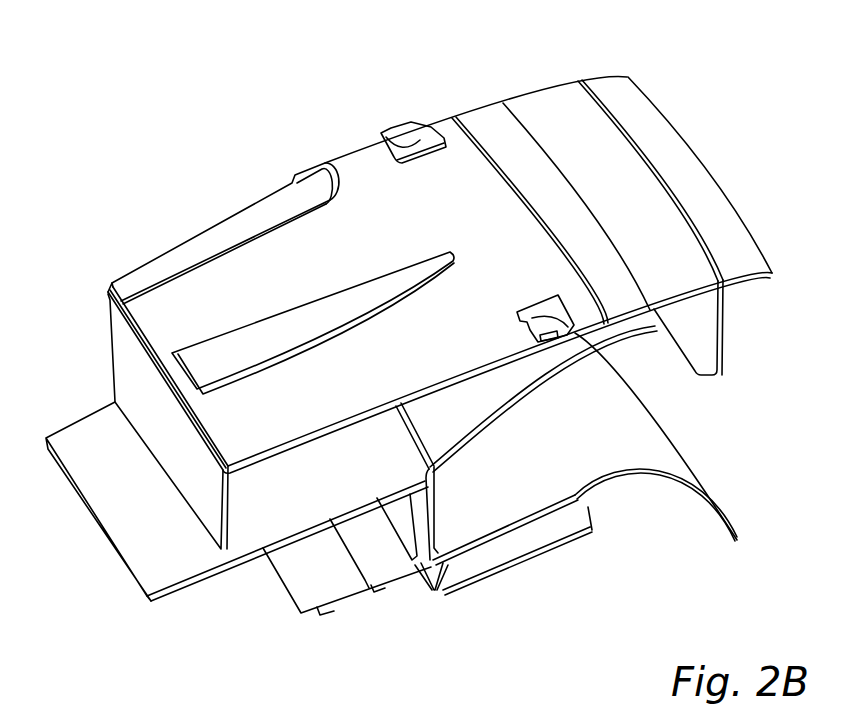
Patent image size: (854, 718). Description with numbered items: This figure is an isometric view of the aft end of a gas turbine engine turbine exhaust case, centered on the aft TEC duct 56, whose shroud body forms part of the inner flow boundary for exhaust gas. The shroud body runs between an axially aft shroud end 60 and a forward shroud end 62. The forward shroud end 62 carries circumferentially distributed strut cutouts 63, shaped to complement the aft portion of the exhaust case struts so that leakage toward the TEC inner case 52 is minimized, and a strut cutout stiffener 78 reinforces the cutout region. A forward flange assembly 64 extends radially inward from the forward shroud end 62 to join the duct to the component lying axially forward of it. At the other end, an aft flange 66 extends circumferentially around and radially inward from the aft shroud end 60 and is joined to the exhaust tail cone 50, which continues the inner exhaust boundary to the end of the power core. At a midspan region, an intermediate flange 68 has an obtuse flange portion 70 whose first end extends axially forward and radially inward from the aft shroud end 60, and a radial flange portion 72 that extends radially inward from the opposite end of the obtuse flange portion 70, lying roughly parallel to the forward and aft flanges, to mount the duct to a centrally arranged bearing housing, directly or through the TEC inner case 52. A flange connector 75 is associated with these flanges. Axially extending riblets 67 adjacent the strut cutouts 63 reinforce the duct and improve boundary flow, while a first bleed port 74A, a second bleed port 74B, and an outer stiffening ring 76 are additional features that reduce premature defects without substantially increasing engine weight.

The exhaust tail cone 50 is at (745, 233).
The TEC inner case 52 is at (291, 489).
The aft TEC duct 56 is at (241, 102).
The aft shroud end 60 is at (533, 68).
The forward shroud end 62 is at (199, 282).
The strut cutout 63 is at (191, 221).
The forward flange assembly 64 is at (135, 375).
The aft flange 66 is at (698, 325).
The riblet 67 is at (352, 302).
The intermediate flange 68 is at (500, 449).
The obtuse flange portion 70 is at (460, 412).
The radial flange portion 72 is at (449, 503).
The first bleed port 74A is at (391, 119).
The second bleed port 74B is at (581, 350).
The flange connector 75 is at (641, 322).
The outer stiffening ring 76 is at (489, 132).
The strut cutout stiffener 78 is at (257, 215).